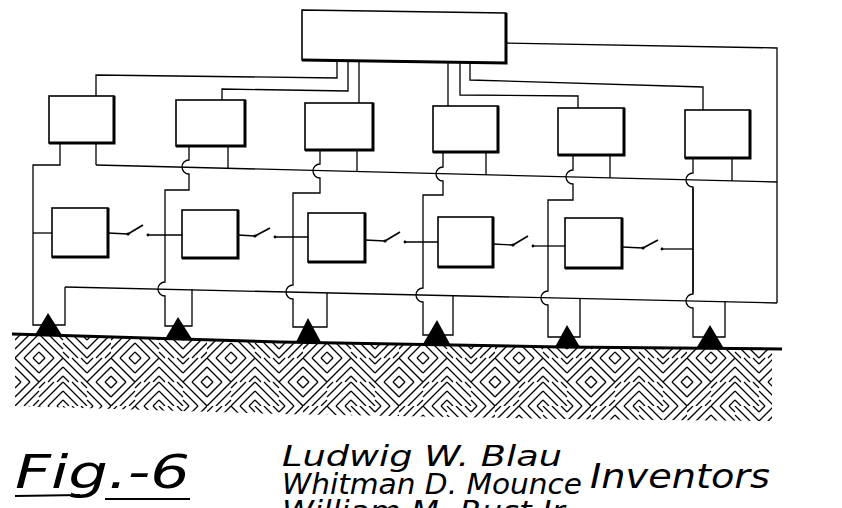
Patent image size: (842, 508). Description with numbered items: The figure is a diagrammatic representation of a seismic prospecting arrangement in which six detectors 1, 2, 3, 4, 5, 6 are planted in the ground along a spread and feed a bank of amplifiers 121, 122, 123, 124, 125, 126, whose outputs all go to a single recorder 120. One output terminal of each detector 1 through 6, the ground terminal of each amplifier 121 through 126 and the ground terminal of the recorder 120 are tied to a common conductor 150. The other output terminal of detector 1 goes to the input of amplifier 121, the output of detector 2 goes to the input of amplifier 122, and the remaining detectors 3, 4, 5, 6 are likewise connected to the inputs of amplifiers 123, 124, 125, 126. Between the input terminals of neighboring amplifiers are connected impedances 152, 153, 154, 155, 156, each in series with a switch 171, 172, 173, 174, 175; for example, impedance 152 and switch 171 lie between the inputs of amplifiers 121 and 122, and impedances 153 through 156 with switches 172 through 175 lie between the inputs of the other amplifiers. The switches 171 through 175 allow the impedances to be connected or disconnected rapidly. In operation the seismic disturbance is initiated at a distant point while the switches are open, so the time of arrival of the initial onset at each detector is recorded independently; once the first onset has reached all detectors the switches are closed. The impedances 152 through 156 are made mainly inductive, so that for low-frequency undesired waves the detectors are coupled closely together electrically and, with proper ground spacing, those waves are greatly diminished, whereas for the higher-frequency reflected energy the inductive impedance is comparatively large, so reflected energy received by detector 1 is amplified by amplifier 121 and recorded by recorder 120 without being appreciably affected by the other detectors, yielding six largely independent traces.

The recorder 120 is at (404, 36).
The amplifier 121 is at (81, 119).
The amplifier 122 is at (210, 123).
The amplifier 123 is at (339, 126).
The amplifier 124 is at (465, 129).
The amplifier 125 is at (591, 131).
The amplifier 126 is at (717, 134).
The common conductor 150 is at (750, 300).
The impedance 152 is at (80, 232).
The impedance 153 is at (210, 234).
The impedance 154 is at (336, 237).
The impedance 155 is at (465, 242).
The impedance 156 is at (593, 243).
The switch 171 is at (130, 249).
The switch 172 is at (262, 252).
The switch 173 is at (390, 257).
The switch 174 is at (517, 260).
The switch 175 is at (644, 263).
The detector 1 is at (48, 351).
The detector 2 is at (178, 356).
The detector 3 is at (307, 358).
The detector 4 is at (436, 360).
The detector 5 is at (564, 363).
The detector 6 is at (709, 365).